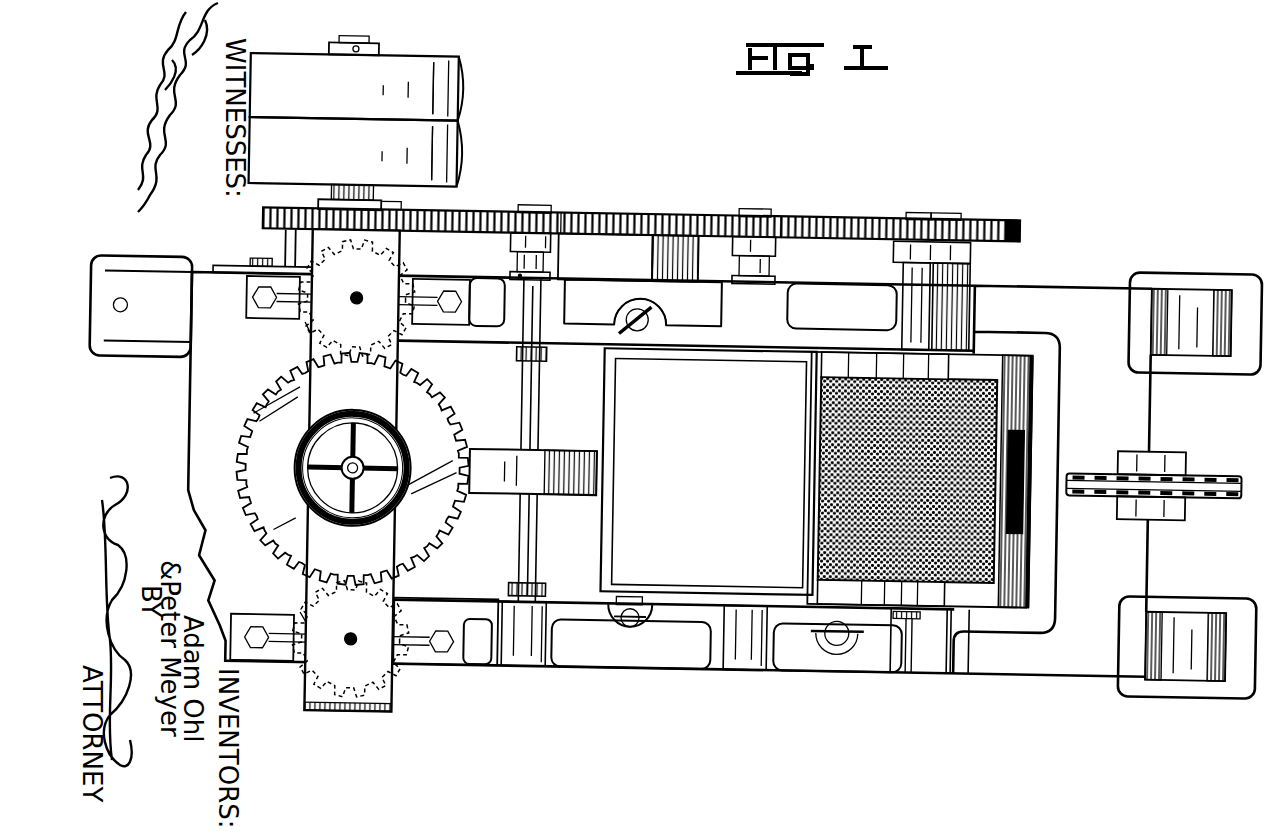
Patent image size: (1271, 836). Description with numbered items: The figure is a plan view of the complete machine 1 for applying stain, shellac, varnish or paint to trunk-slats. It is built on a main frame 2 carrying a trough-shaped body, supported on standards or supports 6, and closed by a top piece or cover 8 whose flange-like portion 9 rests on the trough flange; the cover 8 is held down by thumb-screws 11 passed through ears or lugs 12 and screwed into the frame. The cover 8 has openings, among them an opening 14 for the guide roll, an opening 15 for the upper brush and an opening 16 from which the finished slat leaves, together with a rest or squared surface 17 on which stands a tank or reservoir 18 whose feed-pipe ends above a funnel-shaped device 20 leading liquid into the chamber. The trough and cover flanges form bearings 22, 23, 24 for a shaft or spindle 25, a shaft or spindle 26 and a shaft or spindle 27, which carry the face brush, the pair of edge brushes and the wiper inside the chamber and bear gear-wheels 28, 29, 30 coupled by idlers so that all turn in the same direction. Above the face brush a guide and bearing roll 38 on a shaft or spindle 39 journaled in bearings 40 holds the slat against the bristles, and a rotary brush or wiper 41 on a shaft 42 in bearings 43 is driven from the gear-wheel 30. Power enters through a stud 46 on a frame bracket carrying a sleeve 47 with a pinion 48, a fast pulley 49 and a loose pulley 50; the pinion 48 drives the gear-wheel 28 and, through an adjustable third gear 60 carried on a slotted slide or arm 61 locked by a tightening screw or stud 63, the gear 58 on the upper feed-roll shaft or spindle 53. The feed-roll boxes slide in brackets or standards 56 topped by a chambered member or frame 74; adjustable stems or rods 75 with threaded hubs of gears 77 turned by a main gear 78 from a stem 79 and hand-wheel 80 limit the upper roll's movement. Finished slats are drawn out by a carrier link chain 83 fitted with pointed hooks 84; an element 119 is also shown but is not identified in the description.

The complete machine 1 is at (642, 204).
The main frame 2 is at (652, 475).
The standards or supports 6 is at (1185, 300).
The top piece or cover 8 is at (1080, 398).
The flange-like portion 9 is at (480, 325).
The thumb-screws 11 is at (816, 638).
The ears or lugs 12 is at (630, 306).
The opening 14 is at (568, 495).
The opening 15 is at (821, 425).
The opening 16 is at (1030, 446).
The rest or squared surface 17 is at (606, 547).
The tank or reservoir 18 is at (620, 506).
The funnel-shaped device 20 is at (651, 626).
The bearings 22 is at (565, 281).
The bearings 23 is at (780, 291).
The bearings 24 is at (980, 291).
The shaft or spindle 25 is at (538, 205).
The shaft or spindle 26 is at (748, 205).
The shaft or spindle 27 is at (953, 213).
The gear-wheel 28 is at (568, 218).
The gear-wheel 29 is at (785, 215).
The gear-wheel 30 is at (1005, 224).
The guide and bearing roll 38 is at (568, 458).
The shaft or spindle 39 is at (524, 393).
The bearings 40 is at (512, 352).
The rotary brush or wiper 41 is at (900, 226).
The shaft 42 is at (918, 213).
The bearings 43 is at (882, 358).
The stud 46 is at (358, 36).
The sleeve 47 is at (353, 58).
The pinion 48 is at (263, 210).
The fast pulley 49 is at (453, 135).
The loose pulley 50 is at (432, 66).
The shaft or spindle 53 is at (380, 205).
The brackets or standards 56 is at (458, 281).
The gear 58 is at (412, 212).
The third gear 60 is at (302, 212).
The slide or arm 61 is at (228, 263).
The tightening screw or stud 63 is at (255, 257).
The chambered member or frame 74 is at (322, 728).
The adjustable stems or rods 75 is at (355, 296).
The gears 77 is at (312, 323).
The main gear 78 is at (268, 392).
The stem 79 is at (368, 466).
The hand-wheel 80 is at (414, 485).
The link chain 83 is at (1200, 502).
The pointed hooks 84 is at (1196, 470).
The pin 119 is at (655, 311).